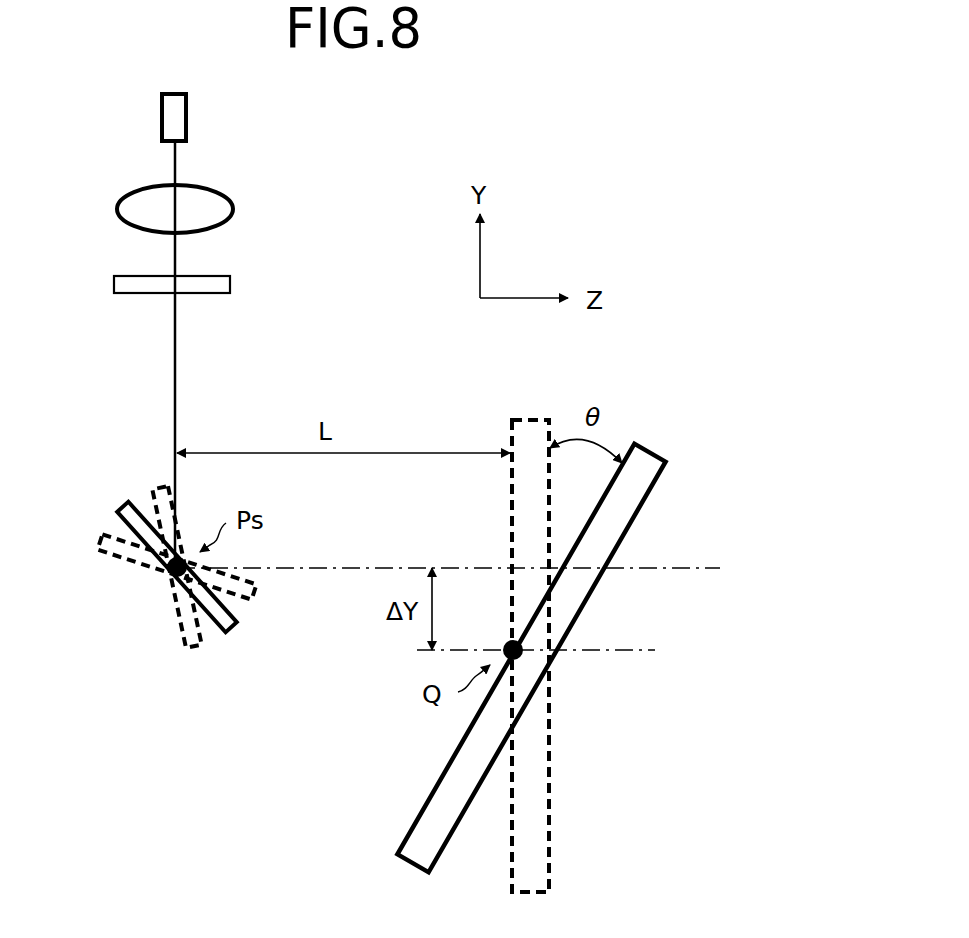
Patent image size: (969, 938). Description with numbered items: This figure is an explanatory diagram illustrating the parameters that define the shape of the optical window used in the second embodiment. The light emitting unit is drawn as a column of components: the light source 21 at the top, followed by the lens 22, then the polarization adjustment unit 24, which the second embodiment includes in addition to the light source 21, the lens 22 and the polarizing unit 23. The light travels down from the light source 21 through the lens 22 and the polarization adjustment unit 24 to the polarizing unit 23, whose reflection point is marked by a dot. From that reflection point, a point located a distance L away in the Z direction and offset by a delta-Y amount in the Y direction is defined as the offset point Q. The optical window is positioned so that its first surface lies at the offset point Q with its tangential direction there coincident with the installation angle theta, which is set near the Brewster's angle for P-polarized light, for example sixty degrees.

The light source 21 is at (162, 119).
The lens 22 is at (117, 212).
The polarizing unit 23 is at (115, 512).
The polarization adjustment unit 24 is at (114, 286).